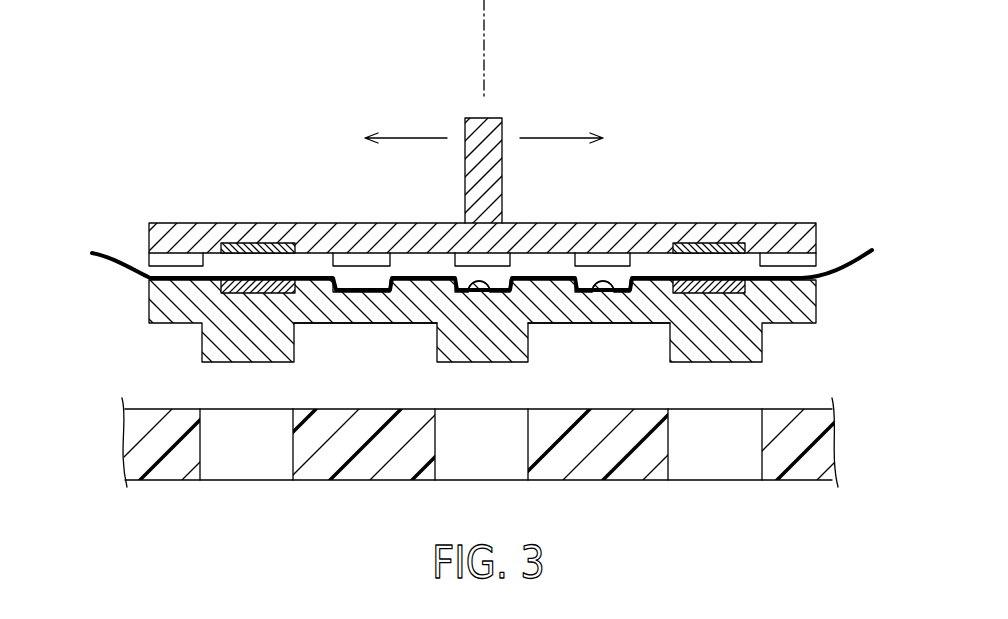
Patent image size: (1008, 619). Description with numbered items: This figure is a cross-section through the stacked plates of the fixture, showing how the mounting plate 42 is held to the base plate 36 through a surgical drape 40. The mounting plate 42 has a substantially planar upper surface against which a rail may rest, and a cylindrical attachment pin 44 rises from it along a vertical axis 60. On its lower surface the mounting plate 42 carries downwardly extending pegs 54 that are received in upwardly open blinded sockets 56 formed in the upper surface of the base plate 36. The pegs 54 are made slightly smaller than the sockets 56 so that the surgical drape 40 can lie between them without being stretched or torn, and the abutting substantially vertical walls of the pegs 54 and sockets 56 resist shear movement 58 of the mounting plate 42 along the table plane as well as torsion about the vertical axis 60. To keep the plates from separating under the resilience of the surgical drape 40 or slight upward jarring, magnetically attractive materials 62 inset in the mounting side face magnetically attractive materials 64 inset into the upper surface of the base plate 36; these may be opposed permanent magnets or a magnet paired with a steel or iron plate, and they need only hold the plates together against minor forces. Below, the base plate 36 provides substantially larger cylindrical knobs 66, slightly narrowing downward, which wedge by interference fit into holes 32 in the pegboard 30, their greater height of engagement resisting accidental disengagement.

The pegboard 30 is at (98, 448).
The holes 32 is at (200, 445).
The base plate 36 is at (743, 347).
The surgical drape 40 is at (122, 253).
The mounting plate 42 is at (778, 223).
The cylindrical attachment pin 44 is at (483, 118).
The pegs 54 is at (618, 267).
The sockets 56 is at (600, 292).
The shear movement 58 is at (410, 138).
The vertical axis 60 is at (483, 43).
The magnetically attractive materials 62 is at (247, 243).
The magnetically attractive materials 64 is at (245, 282).
The cylindrical knobs 66 is at (437, 340).